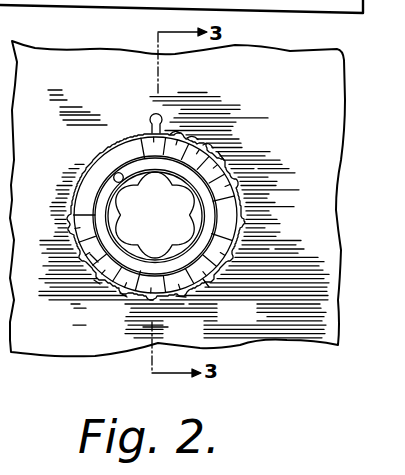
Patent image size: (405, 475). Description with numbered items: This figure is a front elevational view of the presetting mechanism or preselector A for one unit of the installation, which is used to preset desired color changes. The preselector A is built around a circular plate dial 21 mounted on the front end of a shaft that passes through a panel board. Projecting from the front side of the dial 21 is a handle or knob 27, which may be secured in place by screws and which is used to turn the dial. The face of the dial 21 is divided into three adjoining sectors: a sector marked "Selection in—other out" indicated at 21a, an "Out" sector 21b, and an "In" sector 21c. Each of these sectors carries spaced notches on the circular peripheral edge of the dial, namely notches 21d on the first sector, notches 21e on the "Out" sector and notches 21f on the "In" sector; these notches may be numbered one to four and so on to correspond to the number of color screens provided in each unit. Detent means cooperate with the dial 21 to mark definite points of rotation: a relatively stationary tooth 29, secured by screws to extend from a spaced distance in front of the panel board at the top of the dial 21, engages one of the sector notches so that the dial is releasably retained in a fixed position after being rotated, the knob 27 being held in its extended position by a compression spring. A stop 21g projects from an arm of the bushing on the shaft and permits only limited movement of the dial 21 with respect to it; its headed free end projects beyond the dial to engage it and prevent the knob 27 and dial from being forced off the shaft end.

The circular plate dial 21 is at (92, 191).
The "Selection in—other out" sector 21a is at (220, 154).
The "Out" sector 21b is at (206, 284).
The "In" sector 21c is at (95, 258).
The notches 21d is at (207, 145).
The notches 21e is at (183, 298).
The notches 21f is at (123, 295).
The stop 21g is at (117, 172).
The handle or knob 27 is at (185, 231).
The stationary tooth 29 is at (149, 118).
The preselector A is at (73, 157).